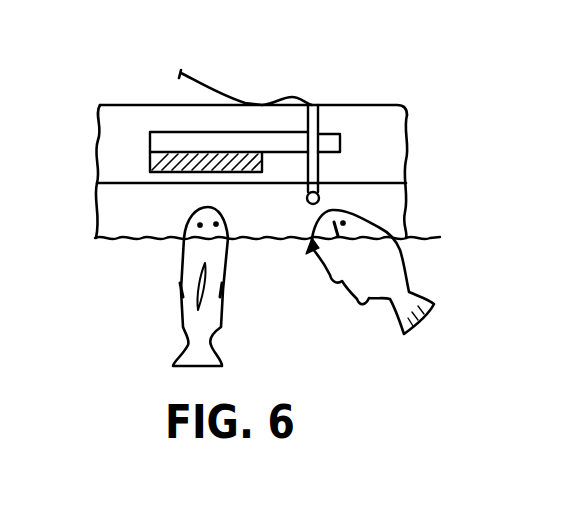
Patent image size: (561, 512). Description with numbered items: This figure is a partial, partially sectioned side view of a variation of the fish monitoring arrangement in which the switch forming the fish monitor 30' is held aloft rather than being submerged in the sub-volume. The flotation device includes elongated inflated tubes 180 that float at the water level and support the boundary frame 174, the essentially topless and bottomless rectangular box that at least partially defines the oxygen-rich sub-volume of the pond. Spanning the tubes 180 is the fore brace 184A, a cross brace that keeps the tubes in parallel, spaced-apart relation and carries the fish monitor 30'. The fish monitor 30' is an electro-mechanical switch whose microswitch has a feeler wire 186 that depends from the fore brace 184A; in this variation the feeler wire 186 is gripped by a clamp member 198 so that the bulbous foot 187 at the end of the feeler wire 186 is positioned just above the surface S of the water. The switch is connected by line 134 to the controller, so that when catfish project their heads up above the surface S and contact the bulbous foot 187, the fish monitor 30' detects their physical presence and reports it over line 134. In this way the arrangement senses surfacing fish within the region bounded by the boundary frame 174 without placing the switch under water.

The fish monitor 30' is at (261, 71).
The inflated tubes 180 is at (384, 115).
The fore brace 184A is at (152, 162).
The feeler wire 186 is at (315, 130).
The bulbous foot 187 is at (306, 203).
The clamp member 198 is at (337, 143).
The line 134 is at (219, 95).
The boundary frame 174 is at (143, 220).
The surface S is at (405, 240).